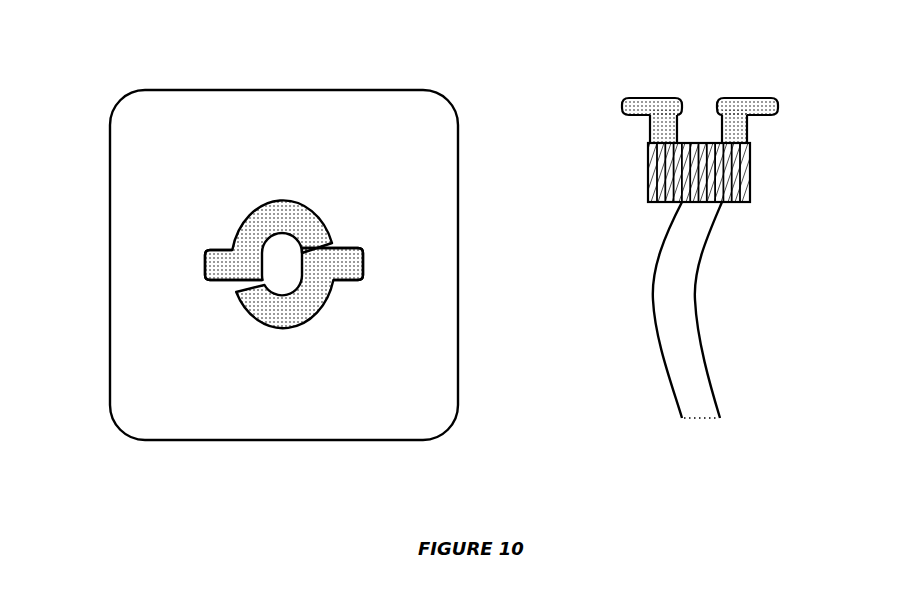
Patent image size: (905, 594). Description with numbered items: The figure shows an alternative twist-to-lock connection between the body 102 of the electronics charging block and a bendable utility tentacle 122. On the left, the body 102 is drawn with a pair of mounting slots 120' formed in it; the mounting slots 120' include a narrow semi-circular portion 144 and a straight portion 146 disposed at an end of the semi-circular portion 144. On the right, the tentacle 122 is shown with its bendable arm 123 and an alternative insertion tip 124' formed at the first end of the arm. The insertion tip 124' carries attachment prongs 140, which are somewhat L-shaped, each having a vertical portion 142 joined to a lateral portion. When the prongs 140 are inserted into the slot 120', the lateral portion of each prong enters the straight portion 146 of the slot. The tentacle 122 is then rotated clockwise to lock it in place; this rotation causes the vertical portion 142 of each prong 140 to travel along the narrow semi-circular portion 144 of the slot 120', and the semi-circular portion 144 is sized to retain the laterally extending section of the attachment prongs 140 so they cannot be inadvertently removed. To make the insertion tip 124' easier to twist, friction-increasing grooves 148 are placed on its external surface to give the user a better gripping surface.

The body 102 is at (464, 112).
The mounting slots 120' is at (230, 264).
The semi-circular portion 144 is at (276, 222).
The straight portion 146 is at (337, 262).
The insertion tip 124' is at (704, 103).
The attachment prongs 140 is at (627, 102).
The vertical portion 142 is at (665, 130).
The friction-increasing grooves 148 is at (738, 195).
The bendable utility tentacle 122 is at (704, 317).
The bendable arm 123 is at (683, 350).